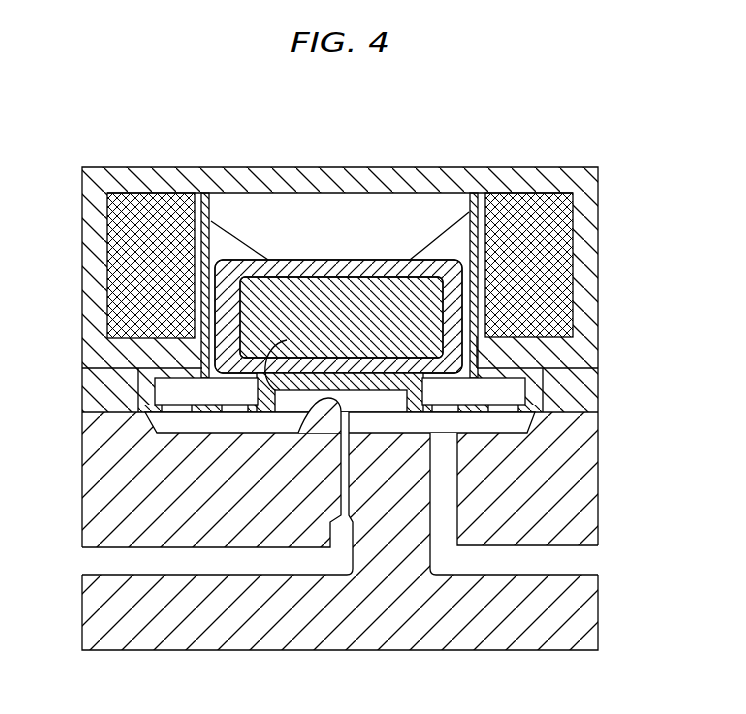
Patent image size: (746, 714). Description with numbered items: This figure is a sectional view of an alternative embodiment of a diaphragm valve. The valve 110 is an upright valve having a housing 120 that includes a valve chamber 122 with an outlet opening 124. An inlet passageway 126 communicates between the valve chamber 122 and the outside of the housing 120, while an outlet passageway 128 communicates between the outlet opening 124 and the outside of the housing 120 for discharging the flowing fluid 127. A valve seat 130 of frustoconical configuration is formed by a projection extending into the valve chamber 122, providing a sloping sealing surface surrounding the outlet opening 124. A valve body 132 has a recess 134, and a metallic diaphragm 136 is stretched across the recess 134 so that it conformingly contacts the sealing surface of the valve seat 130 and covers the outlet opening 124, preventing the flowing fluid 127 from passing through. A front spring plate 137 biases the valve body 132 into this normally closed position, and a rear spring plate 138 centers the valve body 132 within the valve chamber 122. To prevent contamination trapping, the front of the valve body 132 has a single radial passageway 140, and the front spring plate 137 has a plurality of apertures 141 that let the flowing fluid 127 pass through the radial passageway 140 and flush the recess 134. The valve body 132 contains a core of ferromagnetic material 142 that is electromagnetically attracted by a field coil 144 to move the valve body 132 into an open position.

The valve 110 is at (641, 220).
The housing 120 is at (519, 143).
The valve chamber 122 is at (213, 222).
The outlet opening 124 is at (298, 433).
The inlet passageway 126 is at (502, 575).
The flowing fluid 127 is at (122, 562).
The outlet passageway 128 is at (194, 575).
The valve seat 130 is at (350, 413).
The valve body 132 is at (357, 258).
The recess 134 is at (395, 385).
The metallic diaphragm 136 is at (304, 412).
The front spring plate 137 is at (143, 418).
The rear spring plate 138 is at (441, 225).
The radial passageway 140 is at (204, 351).
The apertures 141 is at (239, 404).
The core of ferromagnetic material 142 is at (326, 292).
The field coil 144 is at (124, 283).